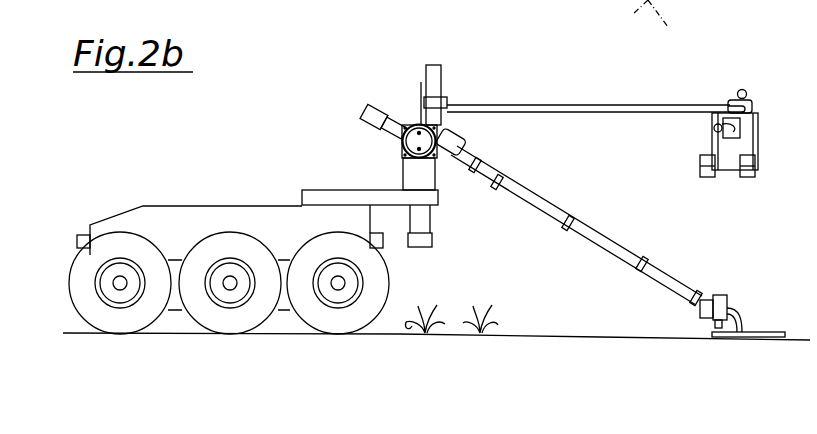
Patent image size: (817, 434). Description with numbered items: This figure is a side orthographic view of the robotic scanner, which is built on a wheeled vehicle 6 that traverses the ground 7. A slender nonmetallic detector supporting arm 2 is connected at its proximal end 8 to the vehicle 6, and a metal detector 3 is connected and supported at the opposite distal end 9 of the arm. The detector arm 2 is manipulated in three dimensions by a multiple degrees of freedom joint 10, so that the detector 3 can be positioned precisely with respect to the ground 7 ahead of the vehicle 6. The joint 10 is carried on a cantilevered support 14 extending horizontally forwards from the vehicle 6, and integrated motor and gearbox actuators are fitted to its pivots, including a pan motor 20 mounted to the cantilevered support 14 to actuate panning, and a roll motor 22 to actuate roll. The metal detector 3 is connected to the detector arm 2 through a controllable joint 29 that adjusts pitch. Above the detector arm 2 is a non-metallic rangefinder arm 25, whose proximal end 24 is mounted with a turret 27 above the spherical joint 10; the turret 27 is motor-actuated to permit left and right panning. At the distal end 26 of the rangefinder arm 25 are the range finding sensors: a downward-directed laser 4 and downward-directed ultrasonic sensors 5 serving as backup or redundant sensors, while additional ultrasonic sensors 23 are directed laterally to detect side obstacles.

The detector supporting arm 2 is at (545, 207).
The metal detector 3 is at (758, 332).
The laser 4 is at (747, 125).
The ultrasonic sensors 5 is at (707, 168).
The wheeled vehicle 6 is at (222, 213).
The ground 7 is at (237, 335).
The proximal end 8 is at (444, 168).
The distal end 9 is at (700, 316).
The multiple degrees of freedom joint 10 is at (403, 103).
The cantilevered support 14 is at (353, 197).
The pan motor 20 is at (420, 247).
The roll motor 22 is at (364, 100).
The ultrasonic sensors 23 is at (743, 89).
The proximal end 24 is at (447, 100).
The rangefinder arm 25 is at (567, 105).
The distal end 26 is at (727, 104).
The turret 27 is at (437, 70).
The controllable joint 29 is at (715, 296).